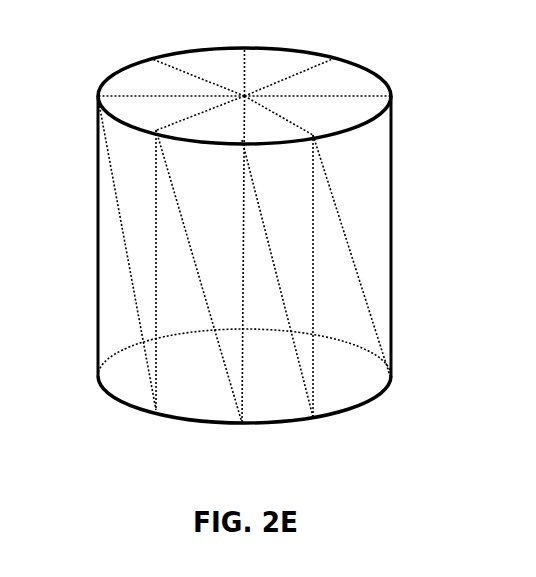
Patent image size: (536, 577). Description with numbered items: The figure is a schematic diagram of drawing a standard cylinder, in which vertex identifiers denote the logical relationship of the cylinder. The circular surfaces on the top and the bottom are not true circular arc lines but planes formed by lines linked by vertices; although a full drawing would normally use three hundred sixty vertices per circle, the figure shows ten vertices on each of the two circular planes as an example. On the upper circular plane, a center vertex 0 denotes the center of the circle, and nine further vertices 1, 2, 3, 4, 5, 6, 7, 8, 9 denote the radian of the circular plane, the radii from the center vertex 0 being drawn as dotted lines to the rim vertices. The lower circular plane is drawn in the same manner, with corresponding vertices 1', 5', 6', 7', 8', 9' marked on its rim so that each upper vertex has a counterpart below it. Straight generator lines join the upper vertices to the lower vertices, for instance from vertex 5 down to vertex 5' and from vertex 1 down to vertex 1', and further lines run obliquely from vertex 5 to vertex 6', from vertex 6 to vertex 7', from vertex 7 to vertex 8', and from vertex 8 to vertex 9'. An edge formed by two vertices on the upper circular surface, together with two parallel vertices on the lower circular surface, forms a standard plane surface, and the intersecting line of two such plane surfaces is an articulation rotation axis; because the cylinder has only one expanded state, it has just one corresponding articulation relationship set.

The vertex for denoting the center of a circle 0 is at (171, 113).
The vertex for denoting the radian of the circular plane 1 is at (406, 229).
The vertex for denoting the radian of the circular plane 2 is at (293, 59).
The vertex for denoting the radian of the circular plane 3 is at (241, 54).
The vertex for denoting the radian of the circular plane 4 is at (191, 60).
The vertex for denoting the radian of the circular plane 5 is at (79, 229).
The vertex for denoting the radian of the circular plane 6 is at (138, 270).
The vertex for denoting the radian of the circular plane 7 is at (225, 259).
The vertex for denoting the radian of the circular plane 8 is at (279, 256).
The vertex for denoting the radian of the circular plane 9 is at (318, 131).
The vertex for denoting the radian of the circular plane 1' is at (265, 361).
The vertex for denoting the radian of the circular plane 5' is at (224, 394).
The vertex for denoting the radian of the circular plane 6' is at (130, 279).
The vertex for denoting the radian of the circular plane 7' is at (203, 302).
The vertex for denoting the radian of the circular plane 8' is at (283, 303).
The vertex for denoting the radian of the circular plane 9' is at (362, 280).